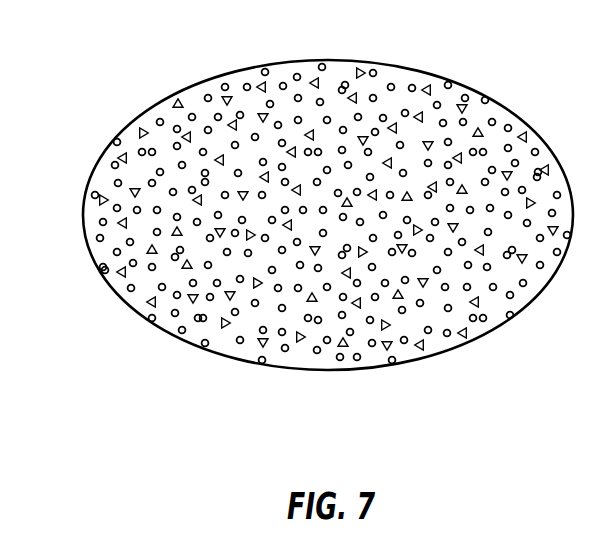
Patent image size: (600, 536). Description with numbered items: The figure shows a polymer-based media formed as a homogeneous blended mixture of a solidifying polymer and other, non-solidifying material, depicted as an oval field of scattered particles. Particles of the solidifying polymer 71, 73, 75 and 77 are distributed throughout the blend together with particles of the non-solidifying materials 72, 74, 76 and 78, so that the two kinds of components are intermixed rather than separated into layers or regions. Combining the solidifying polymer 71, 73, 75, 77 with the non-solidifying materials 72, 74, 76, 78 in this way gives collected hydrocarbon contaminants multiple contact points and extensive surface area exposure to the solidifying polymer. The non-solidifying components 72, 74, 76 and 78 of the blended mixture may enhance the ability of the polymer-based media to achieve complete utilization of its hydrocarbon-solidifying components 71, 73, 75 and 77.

The solidifying polymer 71 is at (393, 85).
The non-solidifying material 72 is at (177, 100).
The solidifying polymer 73 is at (295, 75).
The non-solidifying material 74 is at (100, 201).
The solidifying polymer 75 is at (129, 290).
The non-solidifying material 76 is at (341, 347).
The solidifying polymer 77 is at (405, 343).
The non-solidifying material 78 is at (478, 336).